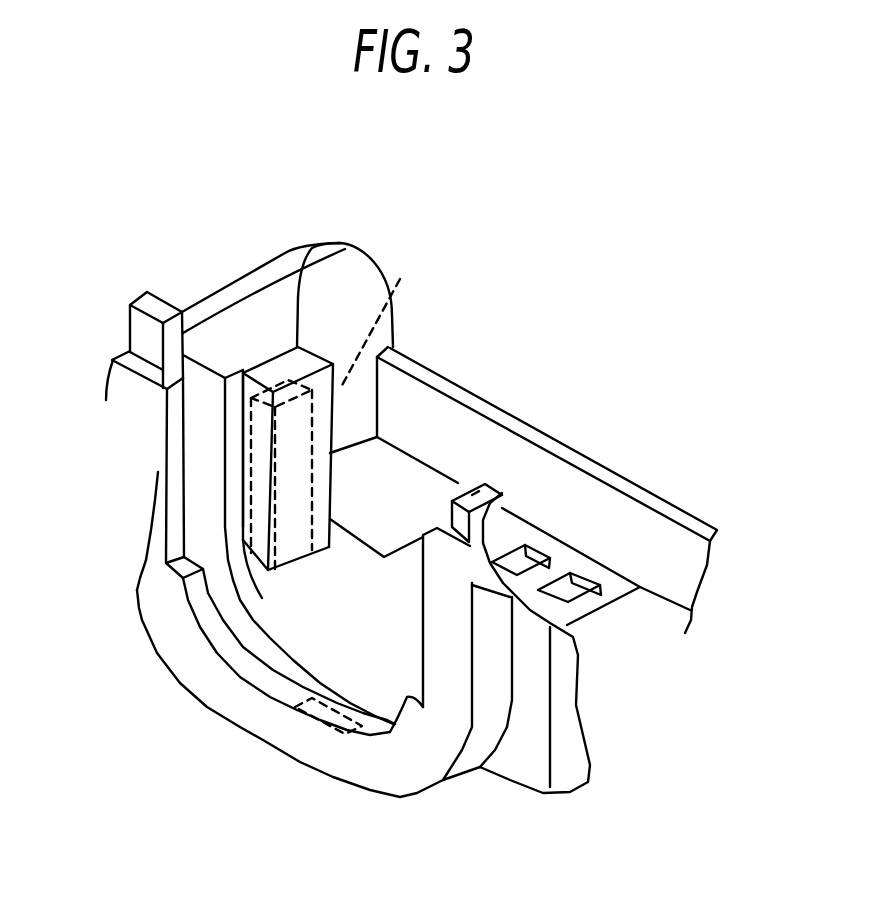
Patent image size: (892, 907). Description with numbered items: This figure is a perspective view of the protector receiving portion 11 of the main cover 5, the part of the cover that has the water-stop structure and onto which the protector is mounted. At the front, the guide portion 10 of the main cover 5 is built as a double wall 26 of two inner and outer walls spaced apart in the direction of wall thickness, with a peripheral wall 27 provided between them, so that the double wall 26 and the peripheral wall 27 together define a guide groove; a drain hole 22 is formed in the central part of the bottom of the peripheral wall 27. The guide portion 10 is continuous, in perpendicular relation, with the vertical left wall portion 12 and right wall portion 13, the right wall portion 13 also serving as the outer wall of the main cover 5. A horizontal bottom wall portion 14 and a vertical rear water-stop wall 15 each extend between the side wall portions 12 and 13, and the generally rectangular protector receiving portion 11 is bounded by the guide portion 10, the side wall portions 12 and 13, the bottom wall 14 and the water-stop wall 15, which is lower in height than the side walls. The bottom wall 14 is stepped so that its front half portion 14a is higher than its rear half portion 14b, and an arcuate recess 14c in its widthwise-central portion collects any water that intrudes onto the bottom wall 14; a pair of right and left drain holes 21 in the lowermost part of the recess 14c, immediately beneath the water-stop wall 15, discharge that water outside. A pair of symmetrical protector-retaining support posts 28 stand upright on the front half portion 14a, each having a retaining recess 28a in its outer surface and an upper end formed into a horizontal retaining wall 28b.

The main cover 5 is at (608, 285).
The guide portion 10 is at (243, 748).
The protector receiving portion 11 is at (633, 650).
The left wall portion 12 is at (242, 280).
The right wall portion 13 is at (563, 700).
The bottom wall portion 14 is at (642, 413).
The front half portion 14a is at (412, 440).
The rear half portion 14b is at (490, 535).
The recess 14c is at (534, 471).
The rear water-stop wall 15 is at (547, 490).
The drain holes 21 is at (561, 583).
The drain hole 22 is at (322, 737).
The double wall 26 is at (215, 508).
The peripheral wall 27 is at (278, 672).
The protector-retaining support posts 28 is at (309, 247).
The retaining recess 28a is at (400, 279).
The horizontal retaining wall 28b is at (278, 370).